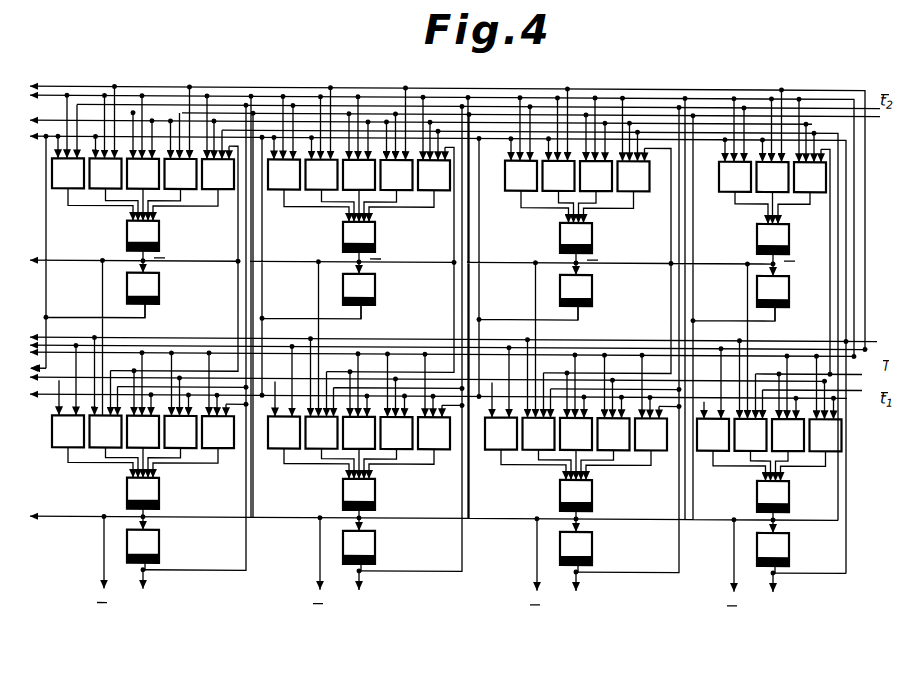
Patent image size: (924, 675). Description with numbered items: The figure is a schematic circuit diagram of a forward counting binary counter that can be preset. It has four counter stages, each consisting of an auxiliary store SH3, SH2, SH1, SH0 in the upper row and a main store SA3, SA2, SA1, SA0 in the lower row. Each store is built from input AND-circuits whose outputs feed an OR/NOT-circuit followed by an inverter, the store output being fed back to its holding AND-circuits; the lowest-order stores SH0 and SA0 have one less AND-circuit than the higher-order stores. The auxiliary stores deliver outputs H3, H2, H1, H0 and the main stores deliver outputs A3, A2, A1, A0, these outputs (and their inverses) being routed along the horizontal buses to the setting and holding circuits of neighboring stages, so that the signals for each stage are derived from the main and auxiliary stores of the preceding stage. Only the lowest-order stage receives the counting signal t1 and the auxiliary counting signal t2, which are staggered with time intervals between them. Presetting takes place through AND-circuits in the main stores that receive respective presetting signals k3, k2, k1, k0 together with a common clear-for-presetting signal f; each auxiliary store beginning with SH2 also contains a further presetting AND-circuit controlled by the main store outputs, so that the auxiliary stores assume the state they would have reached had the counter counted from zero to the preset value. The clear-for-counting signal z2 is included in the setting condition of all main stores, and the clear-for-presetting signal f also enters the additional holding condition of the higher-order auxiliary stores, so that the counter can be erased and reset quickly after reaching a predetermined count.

The auxiliary store SH3 is at (214, 251).
The auxiliary store SH2 is at (430, 251).
The auxiliary store SH1 is at (647, 251).
The auxiliary store SH0 is at (844, 251).
The main store SA3 is at (214, 511).
The main store SA2 is at (430, 511).
The main store SA1 is at (647, 511).
The main store SA0 is at (844, 511).
The auxiliary store output H3 is at (156, 319).
The auxiliary store output H2 is at (372, 320).
The auxiliary store output H1 is at (589, 321).
The auxiliary store output H0 is at (786, 322).
The main store output A3 is at (125, 569).
The main store output A2 is at (341, 571).
The main store output A1 is at (558, 572).
The main store output A0 is at (755, 573).
The presetting signal k3 is at (62, 386).
The presetting signal k2 is at (278, 387).
The presetting signal k1 is at (495, 389).
The presetting signal k0 is at (708, 401).
The auxiliary counting signal t2 is at (537, 124).
The clear-for-counting signal z2 is at (462, 335).
The clear-for-presetting signal f is at (460, 350).
The counting signal t1 is at (824, 381).